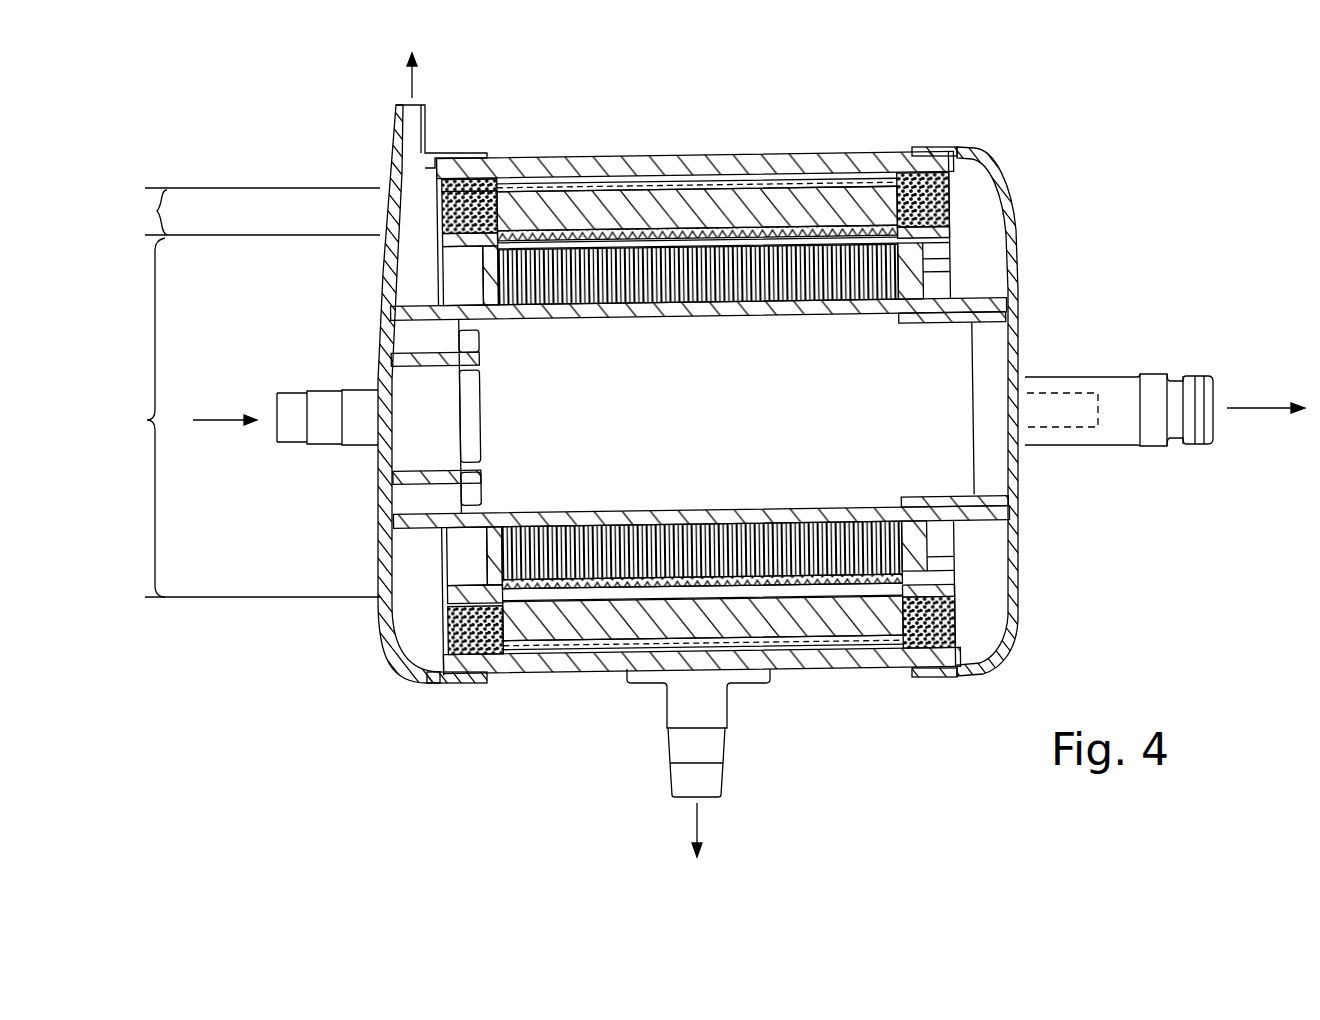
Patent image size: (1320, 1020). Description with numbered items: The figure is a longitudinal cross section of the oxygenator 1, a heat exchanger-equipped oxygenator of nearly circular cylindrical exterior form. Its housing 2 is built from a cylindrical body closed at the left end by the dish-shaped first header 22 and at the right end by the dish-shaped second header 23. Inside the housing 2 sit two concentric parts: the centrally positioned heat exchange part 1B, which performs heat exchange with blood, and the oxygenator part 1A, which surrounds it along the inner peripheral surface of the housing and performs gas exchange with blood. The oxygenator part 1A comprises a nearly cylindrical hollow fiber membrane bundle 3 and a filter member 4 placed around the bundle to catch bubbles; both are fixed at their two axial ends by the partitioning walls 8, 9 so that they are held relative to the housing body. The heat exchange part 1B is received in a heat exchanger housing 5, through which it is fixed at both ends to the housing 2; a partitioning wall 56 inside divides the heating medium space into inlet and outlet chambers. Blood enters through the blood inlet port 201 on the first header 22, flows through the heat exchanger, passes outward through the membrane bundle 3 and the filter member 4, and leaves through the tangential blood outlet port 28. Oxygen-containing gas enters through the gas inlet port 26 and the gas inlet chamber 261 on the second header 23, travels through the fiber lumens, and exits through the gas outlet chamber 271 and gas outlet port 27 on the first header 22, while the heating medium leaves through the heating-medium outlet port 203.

The oxygenator 1 is at (710, 454).
The oxygenator part 1A is at (252, 211).
The heat exchange part 1B is at (247, 417).
The housing 2 is at (696, 441).
The hollow fiber membrane bundle 3 is at (598, 527).
The filter member 4 is at (672, 415).
The heat exchanger housing 5 is at (443, 542).
The partitioning wall 8 is at (500, 185).
The partitioning wall 9 is at (940, 206).
The first header 22 is at (455, 170).
The second header 23 is at (930, 152).
The gas inlet port 26 is at (1093, 389).
The gas outlet port 27 is at (396, 127).
The blood outlet port 28 is at (727, 744).
The partitioning wall 56 is at (980, 357).
The blood inlet port 201 is at (293, 433).
The heating-medium outlet port 203 is at (1119, 417).
The gas inlet chamber 261 is at (975, 572).
The gas outlet chamber 271 is at (417, 282).